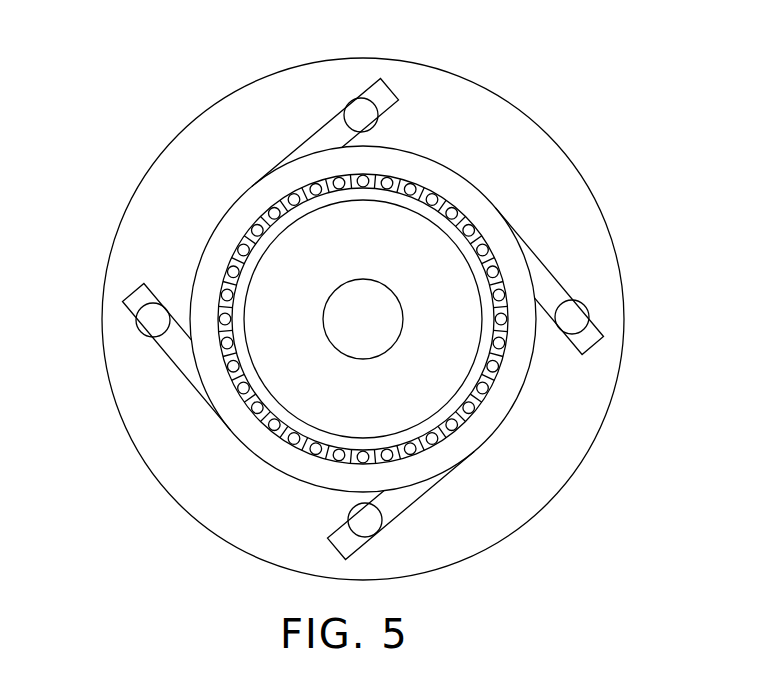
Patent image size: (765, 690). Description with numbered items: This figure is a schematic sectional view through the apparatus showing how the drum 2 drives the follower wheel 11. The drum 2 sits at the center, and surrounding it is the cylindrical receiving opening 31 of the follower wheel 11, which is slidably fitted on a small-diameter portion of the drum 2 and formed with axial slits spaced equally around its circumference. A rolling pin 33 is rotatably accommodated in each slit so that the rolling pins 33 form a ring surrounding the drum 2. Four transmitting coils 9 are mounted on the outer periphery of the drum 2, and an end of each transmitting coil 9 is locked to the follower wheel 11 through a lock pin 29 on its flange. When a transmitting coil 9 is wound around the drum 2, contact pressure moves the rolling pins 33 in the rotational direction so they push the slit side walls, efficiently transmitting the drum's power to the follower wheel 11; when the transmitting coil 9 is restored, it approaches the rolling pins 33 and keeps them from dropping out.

The drum 2 is at (365, 200).
The transmitting coil 9 is at (268, 167).
The follower wheel 11 is at (600, 247).
The lock pin 29 is at (358, 108).
The receiving opening 31 is at (480, 235).
The rolling pin 33 is at (248, 225).